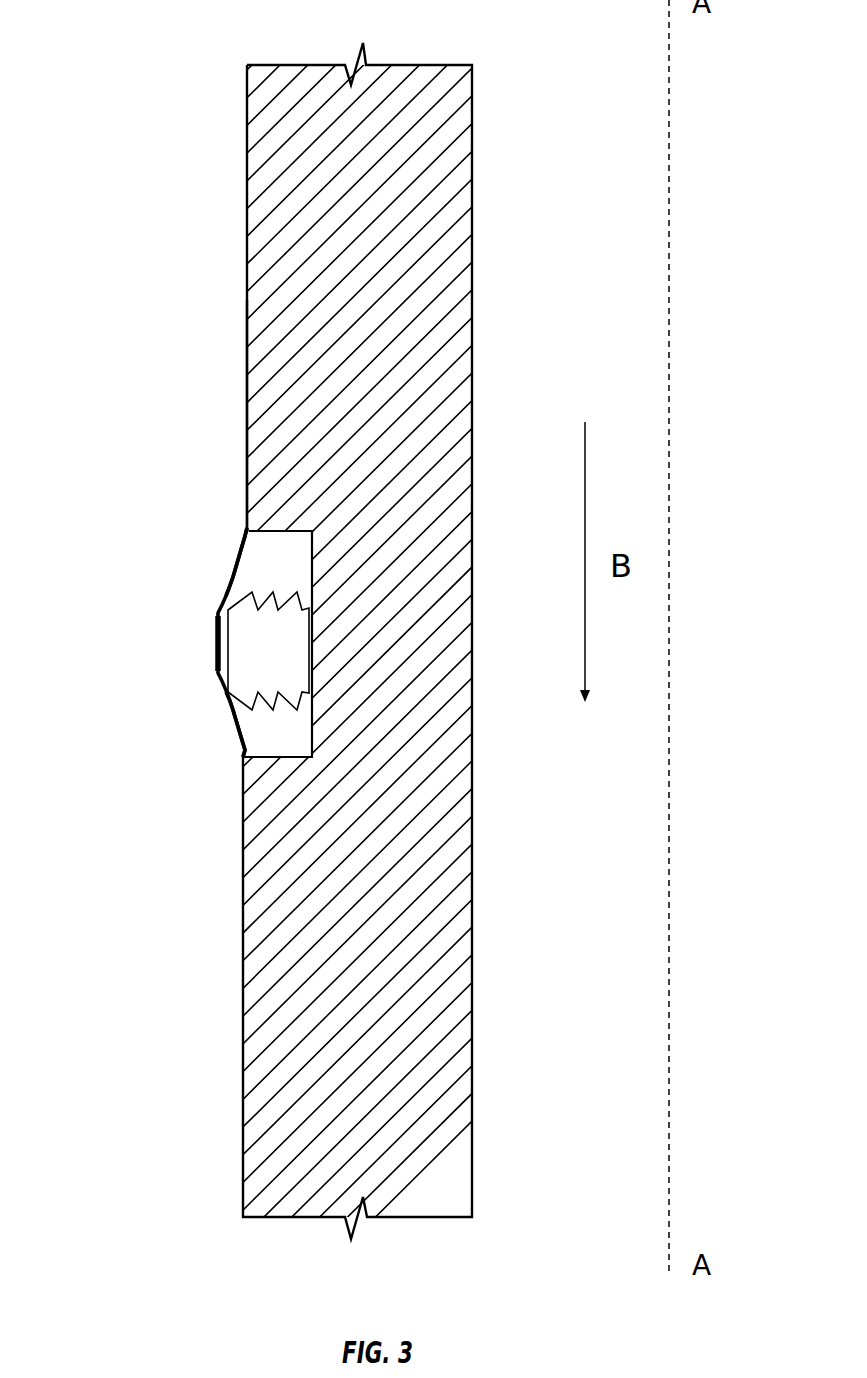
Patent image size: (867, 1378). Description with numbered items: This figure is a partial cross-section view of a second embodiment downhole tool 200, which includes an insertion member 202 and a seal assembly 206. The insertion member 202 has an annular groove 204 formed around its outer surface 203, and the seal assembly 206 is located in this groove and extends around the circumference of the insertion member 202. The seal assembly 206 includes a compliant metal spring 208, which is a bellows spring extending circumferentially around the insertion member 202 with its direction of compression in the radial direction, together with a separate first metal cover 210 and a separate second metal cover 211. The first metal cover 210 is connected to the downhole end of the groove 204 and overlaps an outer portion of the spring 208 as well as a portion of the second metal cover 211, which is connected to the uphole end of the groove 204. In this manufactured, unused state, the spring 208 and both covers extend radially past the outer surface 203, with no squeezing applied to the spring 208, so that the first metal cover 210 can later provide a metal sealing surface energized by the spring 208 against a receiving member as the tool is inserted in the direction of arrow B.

The downhole tool 200 is at (126, 52).
The insertion member 202 is at (472, 222).
The outer surface 203 is at (247, 428).
The annular groove 204 is at (303, 528).
The seal assembly 206 is at (168, 624).
The compliant metal spring 208 is at (297, 652).
The first metal cover 210 is at (224, 712).
The second metal cover 211 is at (242, 558).